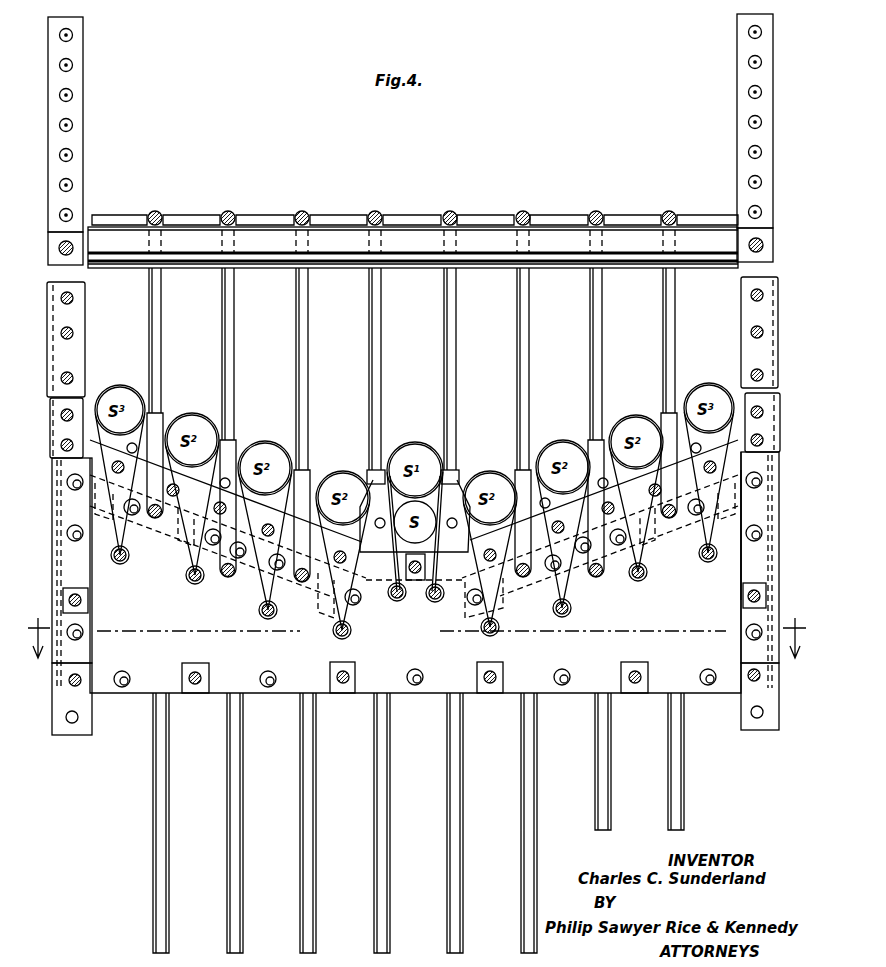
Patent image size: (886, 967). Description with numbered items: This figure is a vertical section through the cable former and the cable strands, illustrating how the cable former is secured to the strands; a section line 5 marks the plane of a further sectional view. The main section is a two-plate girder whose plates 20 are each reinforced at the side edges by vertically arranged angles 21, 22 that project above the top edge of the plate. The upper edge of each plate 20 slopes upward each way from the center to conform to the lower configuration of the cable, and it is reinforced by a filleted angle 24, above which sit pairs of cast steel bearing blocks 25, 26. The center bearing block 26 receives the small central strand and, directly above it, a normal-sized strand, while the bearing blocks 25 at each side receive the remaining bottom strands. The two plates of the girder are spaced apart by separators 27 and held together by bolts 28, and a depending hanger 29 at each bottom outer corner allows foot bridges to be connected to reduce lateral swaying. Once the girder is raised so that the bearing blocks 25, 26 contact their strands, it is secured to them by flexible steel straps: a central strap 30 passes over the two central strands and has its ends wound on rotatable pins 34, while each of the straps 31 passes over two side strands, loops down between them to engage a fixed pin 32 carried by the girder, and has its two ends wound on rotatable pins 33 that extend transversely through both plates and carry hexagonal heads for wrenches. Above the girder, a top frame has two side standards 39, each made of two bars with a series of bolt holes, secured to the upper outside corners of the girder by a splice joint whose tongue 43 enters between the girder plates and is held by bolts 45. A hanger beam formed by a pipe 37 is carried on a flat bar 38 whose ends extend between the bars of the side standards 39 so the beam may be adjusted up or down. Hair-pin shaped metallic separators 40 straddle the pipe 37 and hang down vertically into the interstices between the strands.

The section line 5 is at (418, 638).
The plate 20 is at (143, 684).
The angle 21 is at (756, 572).
The angle 22 is at (63, 549).
The filleted angle 24 is at (168, 557).
The bearing block 25 is at (164, 421).
The center bearing block 26 is at (370, 477).
The separator 27 is at (64, 592).
The bolt 28 is at (76, 596).
The hanger 29 is at (82, 728).
The central strap 30 is at (404, 562).
The strap 31 is at (127, 533).
The fixed pin 32 is at (155, 520).
The rotatable pin 33 is at (119, 565).
The rotatable pin 34 is at (430, 600).
The pipe 37 is at (279, 266).
The flat bar 38 is at (80, 262).
The side standard 39 is at (78, 47).
The metallic separator 40 is at (225, 212).
The tongue 43 is at (73, 360).
The bolt 45 is at (73, 335).